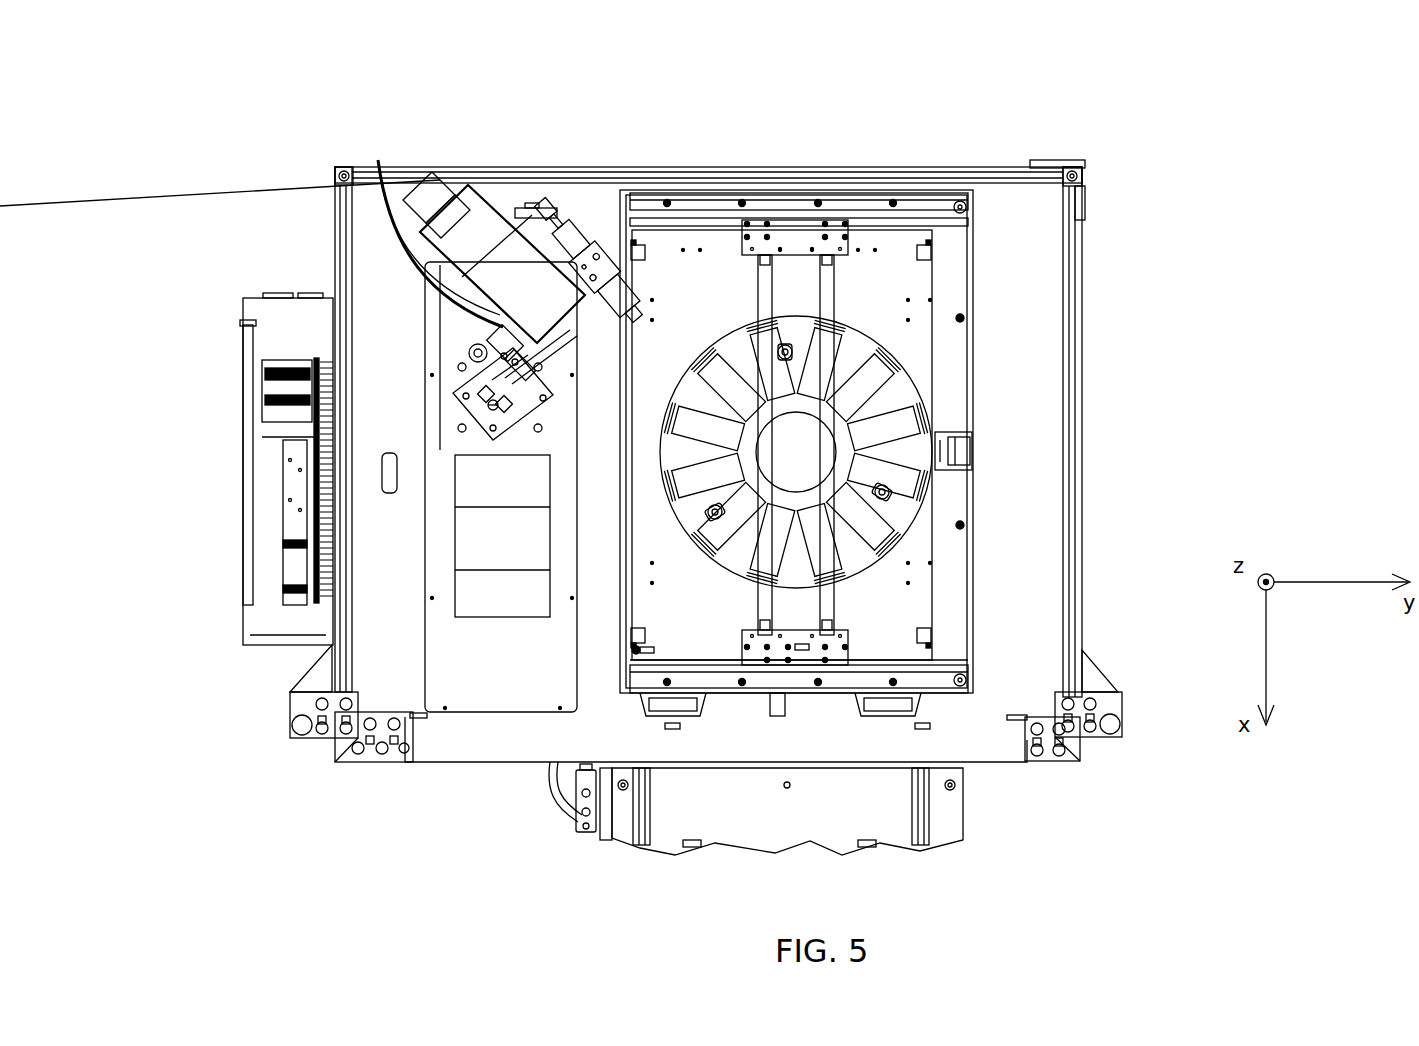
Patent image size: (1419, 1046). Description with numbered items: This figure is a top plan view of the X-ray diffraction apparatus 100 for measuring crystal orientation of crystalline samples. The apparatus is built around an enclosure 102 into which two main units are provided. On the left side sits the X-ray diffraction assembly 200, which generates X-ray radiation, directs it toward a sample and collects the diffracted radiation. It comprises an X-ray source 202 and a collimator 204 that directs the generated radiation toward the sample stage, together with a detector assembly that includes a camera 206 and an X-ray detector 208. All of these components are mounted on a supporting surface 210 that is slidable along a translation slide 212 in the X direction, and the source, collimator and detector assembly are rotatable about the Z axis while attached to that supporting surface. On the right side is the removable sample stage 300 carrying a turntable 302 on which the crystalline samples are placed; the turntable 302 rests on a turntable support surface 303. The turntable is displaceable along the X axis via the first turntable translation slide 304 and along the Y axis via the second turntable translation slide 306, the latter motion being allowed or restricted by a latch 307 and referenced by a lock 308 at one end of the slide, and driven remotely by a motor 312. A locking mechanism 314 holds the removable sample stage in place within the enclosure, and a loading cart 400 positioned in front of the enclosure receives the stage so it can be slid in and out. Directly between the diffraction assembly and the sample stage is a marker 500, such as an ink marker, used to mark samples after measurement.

The X-ray diffraction apparatus 100 is at (212, 85).
The enclosure 102 is at (575, 167).
The X-ray diffraction assembly 200 is at (378, 290).
The X-ray source 202 is at (473, 410).
The collimator 204 is at (508, 356).
The camera 206 is at (379, 163).
The X-ray detector 208 is at (533, 280).
The supporting surface 210 is at (548, 545).
The translation slide 212 is at (450, 447).
The removable sample stage 300 is at (940, 292).
The turntable 302 is at (922, 383).
The turntable support surface 303 is at (920, 550).
The first turntable translation slide 304 is at (763, 288).
The second turntable translation slide 306 is at (873, 226).
The latch 307 is at (815, 655).
The lock 308 is at (637, 655).
The motor 312 is at (962, 452).
The locking mechanism 314 is at (778, 710).
The loading cart 400 is at (885, 817).
The marker 500 is at (607, 262).